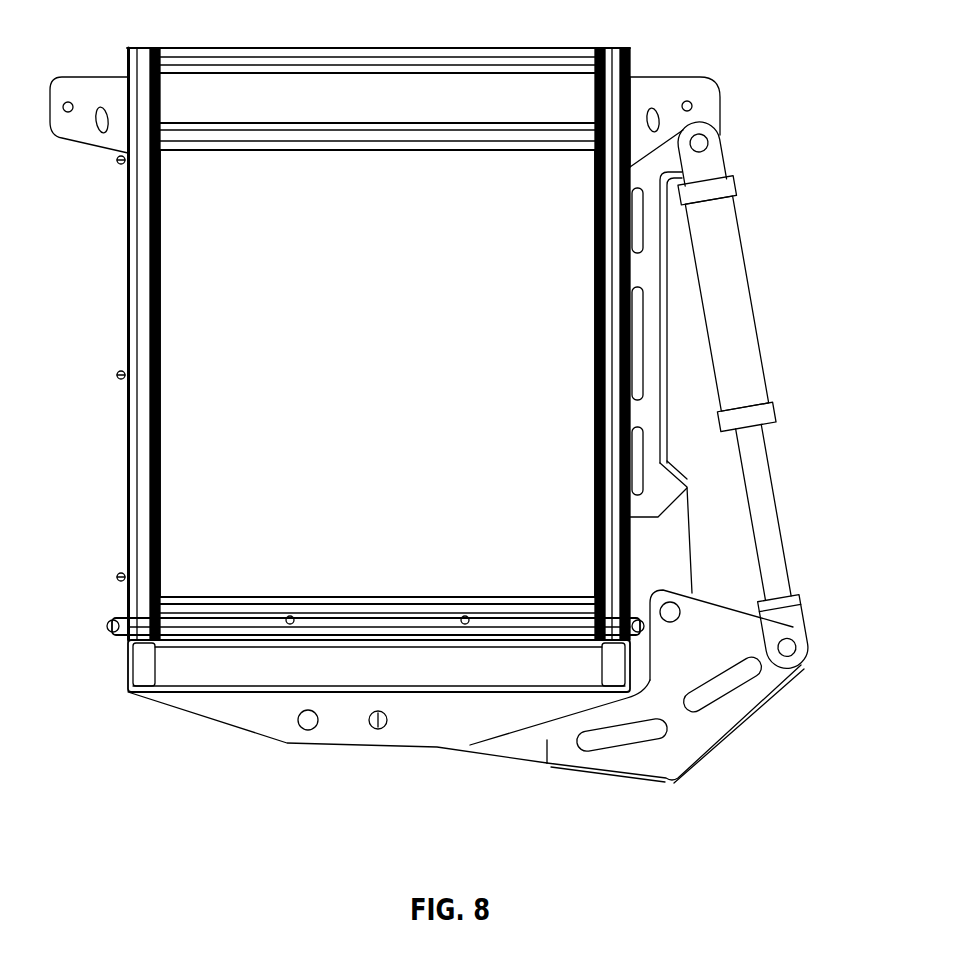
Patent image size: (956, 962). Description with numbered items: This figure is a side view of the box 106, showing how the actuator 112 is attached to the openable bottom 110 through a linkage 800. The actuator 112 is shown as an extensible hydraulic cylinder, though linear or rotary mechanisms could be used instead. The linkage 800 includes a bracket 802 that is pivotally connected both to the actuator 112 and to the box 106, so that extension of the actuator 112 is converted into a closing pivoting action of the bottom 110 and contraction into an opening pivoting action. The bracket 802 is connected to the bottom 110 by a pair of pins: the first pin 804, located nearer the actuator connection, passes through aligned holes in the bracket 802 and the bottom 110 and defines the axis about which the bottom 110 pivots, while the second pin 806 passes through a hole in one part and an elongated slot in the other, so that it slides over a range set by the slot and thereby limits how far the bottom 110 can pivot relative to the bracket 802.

The linkage 800 is at (448, 446).
The box 106 is at (400, 381).
The bottom 110 is at (228, 714).
The actuator 112 is at (743, 327).
The bracket 802 is at (657, 763).
The first pin 804 is at (380, 730).
The second pin 806 is at (302, 712).